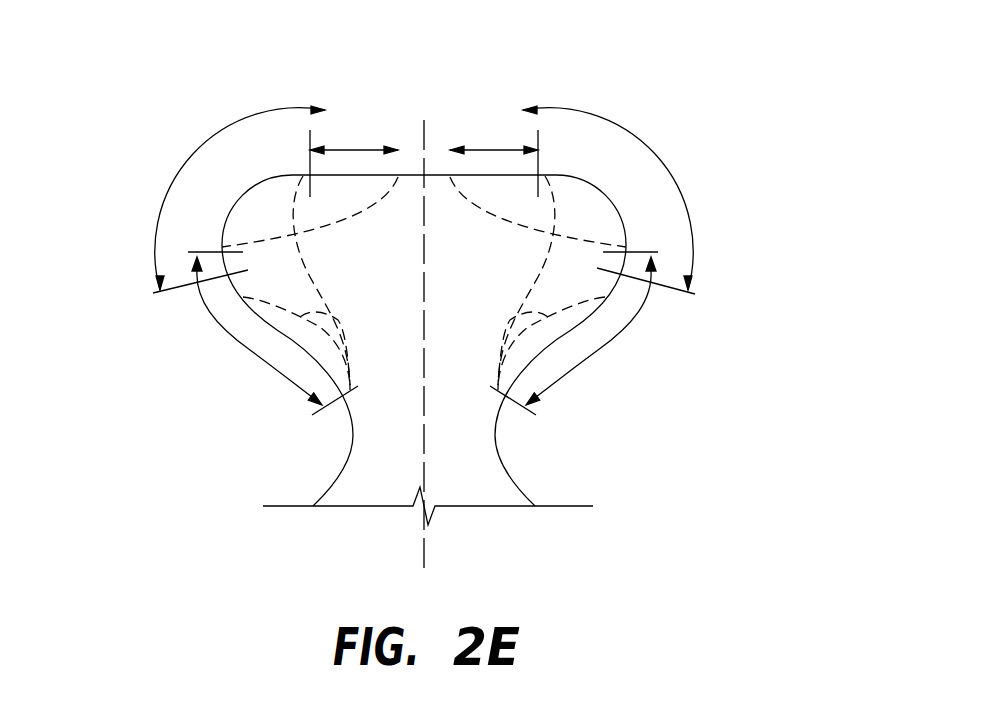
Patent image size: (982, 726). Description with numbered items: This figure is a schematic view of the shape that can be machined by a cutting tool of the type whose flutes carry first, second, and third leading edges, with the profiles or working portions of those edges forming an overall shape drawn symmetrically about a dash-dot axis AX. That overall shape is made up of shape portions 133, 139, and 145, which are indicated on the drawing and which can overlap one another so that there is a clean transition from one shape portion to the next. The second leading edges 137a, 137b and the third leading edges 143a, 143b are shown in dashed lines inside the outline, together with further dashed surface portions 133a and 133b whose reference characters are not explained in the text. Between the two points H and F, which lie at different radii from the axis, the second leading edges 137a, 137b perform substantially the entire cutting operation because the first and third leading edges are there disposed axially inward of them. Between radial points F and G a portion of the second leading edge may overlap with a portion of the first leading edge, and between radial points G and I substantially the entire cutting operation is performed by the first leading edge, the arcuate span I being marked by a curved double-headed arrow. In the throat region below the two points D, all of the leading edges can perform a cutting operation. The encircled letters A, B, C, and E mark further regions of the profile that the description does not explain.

The shape 133 is at (190, 160).
The first outer surface portion 133a is at (333, 317).
The second outer surface portion 133b is at (515, 317).
The second leading edge 137a is at (313, 277).
The second leading edge 137b is at (536, 277).
The shape 139 is at (355, 147).
The third leading edge 143a is at (343, 221).
The third leading edge 143b is at (504, 221).
The shape 145 is at (237, 332).
The nozzle axis AX is at (423, 555).
The region A is at (600, 183).
The region B is at (613, 195).
The region C is at (700, 289).
The point D is at (283, 407).
The region E is at (700, 260).
The point F is at (325, 200).
The point G is at (310, 137).
The point H is at (398, 200).
The point I is at (223, 210).